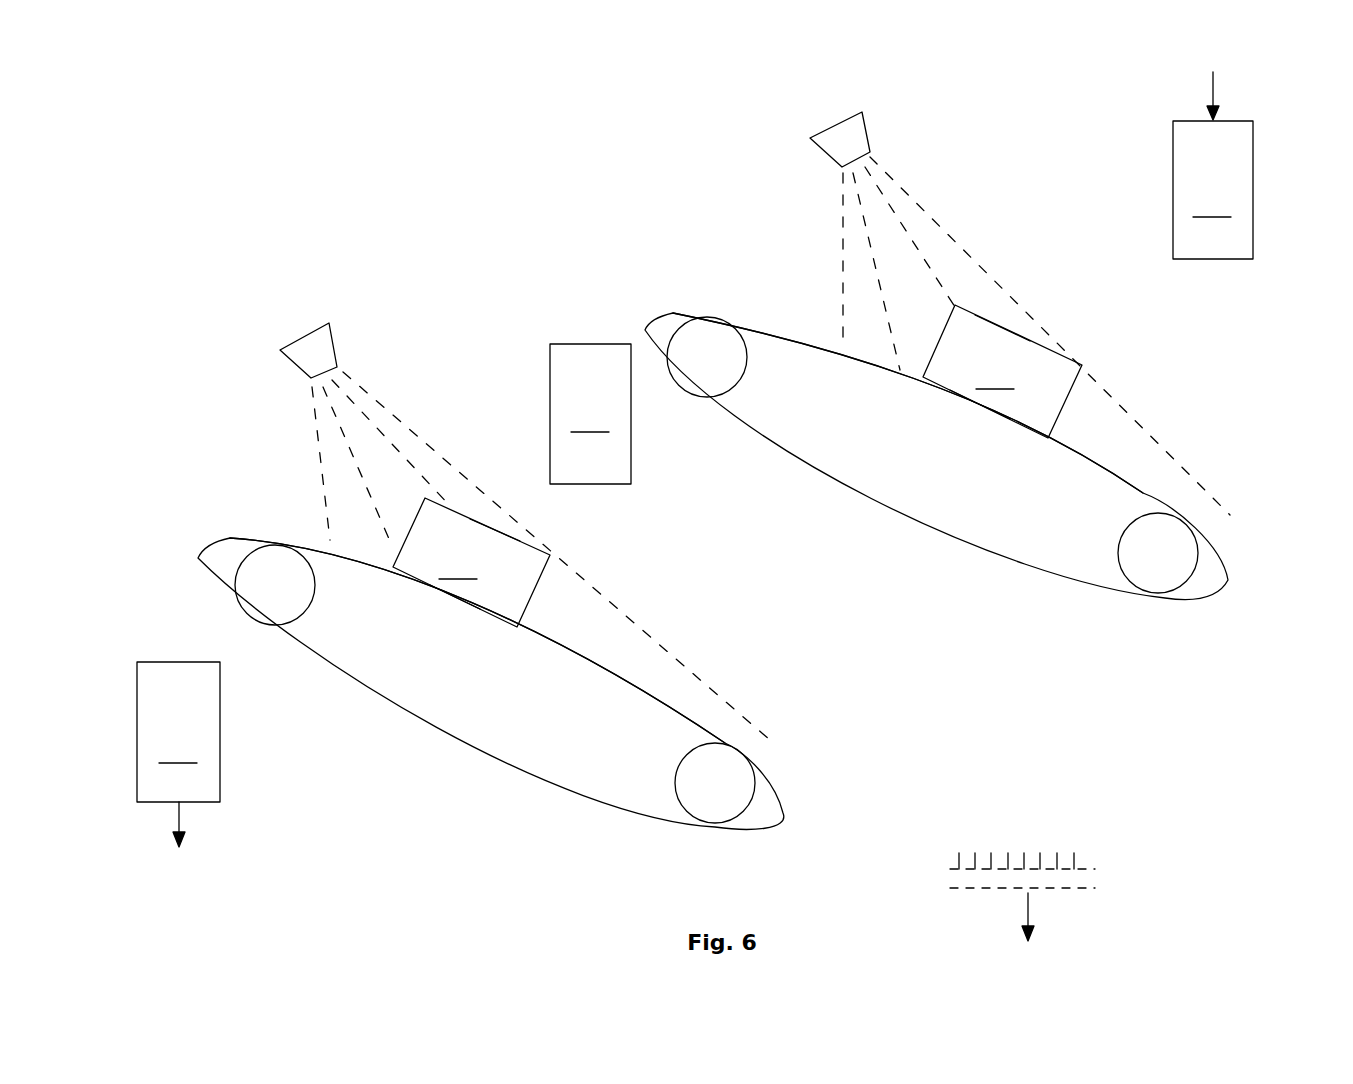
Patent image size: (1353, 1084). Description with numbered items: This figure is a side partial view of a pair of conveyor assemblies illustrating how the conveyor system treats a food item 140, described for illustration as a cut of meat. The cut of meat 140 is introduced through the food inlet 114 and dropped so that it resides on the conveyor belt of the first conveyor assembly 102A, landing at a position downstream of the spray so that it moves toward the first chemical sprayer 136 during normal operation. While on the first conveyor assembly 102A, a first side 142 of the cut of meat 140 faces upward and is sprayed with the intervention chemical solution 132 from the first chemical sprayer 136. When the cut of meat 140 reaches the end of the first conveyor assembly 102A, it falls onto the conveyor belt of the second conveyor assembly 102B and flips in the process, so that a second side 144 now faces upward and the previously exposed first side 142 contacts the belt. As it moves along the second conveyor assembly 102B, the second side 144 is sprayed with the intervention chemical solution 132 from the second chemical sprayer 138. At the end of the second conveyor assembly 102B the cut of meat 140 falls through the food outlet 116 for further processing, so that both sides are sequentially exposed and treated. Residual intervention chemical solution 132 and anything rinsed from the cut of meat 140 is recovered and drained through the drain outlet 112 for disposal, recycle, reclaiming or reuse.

The first conveyor assembly 102A is at (956, 456).
The second conveyor assembly 102B is at (500, 683).
The drain outlet 112 is at (1032, 930).
The food inlet 114 is at (1215, 80).
The food outlet 116 is at (178, 841).
The intervention chemical solution 132 is at (356, 479).
The first chemical sprayer 136 is at (848, 137).
The second chemical sprayer 138 is at (312, 347).
The food item 140 is at (695, 461).
The first side 142 is at (458, 602).
The second side 144 is at (493, 532).